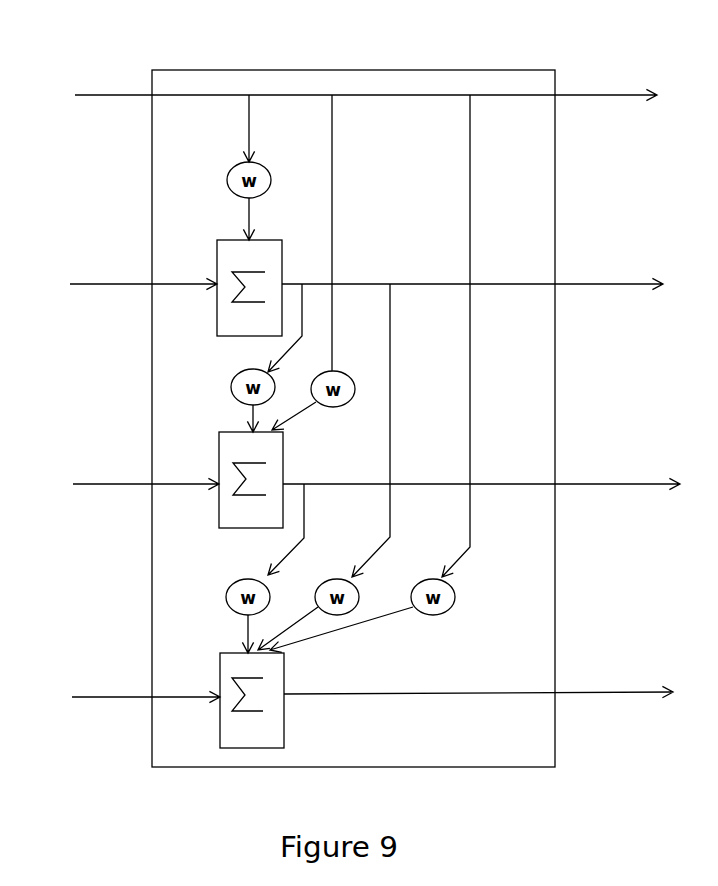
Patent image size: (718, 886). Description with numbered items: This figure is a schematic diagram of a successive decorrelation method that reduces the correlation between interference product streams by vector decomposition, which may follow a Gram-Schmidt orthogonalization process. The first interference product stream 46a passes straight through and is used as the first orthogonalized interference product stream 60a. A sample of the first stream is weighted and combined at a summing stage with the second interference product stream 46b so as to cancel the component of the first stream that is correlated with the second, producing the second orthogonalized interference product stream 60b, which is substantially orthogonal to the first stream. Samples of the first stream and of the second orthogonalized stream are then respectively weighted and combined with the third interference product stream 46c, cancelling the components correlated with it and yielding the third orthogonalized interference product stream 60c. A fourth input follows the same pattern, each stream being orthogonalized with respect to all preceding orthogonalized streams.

The first interference product stream 46a is at (112, 103).
The second interference product stream 46b is at (105, 292).
The third interference product stream 46c is at (105, 492).
The first orthogonalized interference product stream 60a is at (592, 90).
The second orthogonalized interference product stream 60b is at (595, 275).
The third orthogonalized interference product stream 60c is at (600, 478).